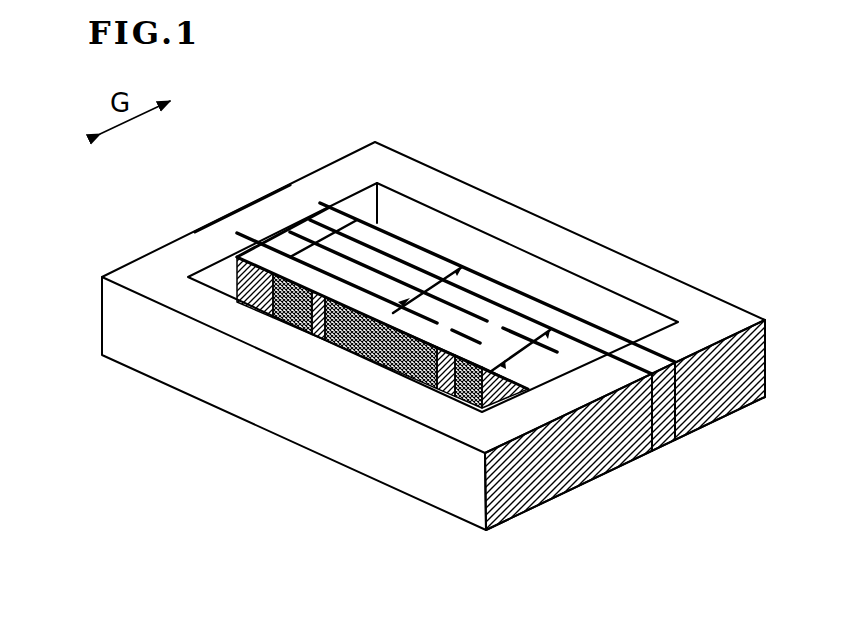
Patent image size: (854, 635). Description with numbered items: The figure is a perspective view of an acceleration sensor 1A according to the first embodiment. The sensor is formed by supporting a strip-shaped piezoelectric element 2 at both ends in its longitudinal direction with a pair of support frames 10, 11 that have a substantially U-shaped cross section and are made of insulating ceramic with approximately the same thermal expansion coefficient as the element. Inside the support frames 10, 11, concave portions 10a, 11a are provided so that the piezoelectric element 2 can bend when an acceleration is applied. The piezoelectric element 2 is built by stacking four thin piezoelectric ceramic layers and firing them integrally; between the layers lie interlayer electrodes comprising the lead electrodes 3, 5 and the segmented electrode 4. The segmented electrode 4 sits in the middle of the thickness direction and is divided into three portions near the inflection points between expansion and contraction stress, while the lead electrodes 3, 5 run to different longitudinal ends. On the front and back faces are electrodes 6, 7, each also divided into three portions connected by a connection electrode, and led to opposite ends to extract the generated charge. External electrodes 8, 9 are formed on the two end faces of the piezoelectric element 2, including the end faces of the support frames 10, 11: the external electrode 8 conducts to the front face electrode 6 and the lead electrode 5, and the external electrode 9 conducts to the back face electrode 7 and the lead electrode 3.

The acceleration sensor 1A is at (610, 208).
The piezoelectric element 2 is at (422, 238).
The lead electrode 3 is at (318, 215).
The segmented electrode 4 is at (297, 230).
The lead electrode 5 is at (243, 228).
The front face electrode 6 is at (345, 205).
The back face electrode 7 is at (343, 347).
The external electrode 8 is at (142, 258).
The external electrode 9 is at (615, 450).
The support frame 10 is at (523, 217).
The concave portion 10a is at (593, 300).
The support frame 11 is at (358, 448).
The concave portion 11a is at (233, 290).